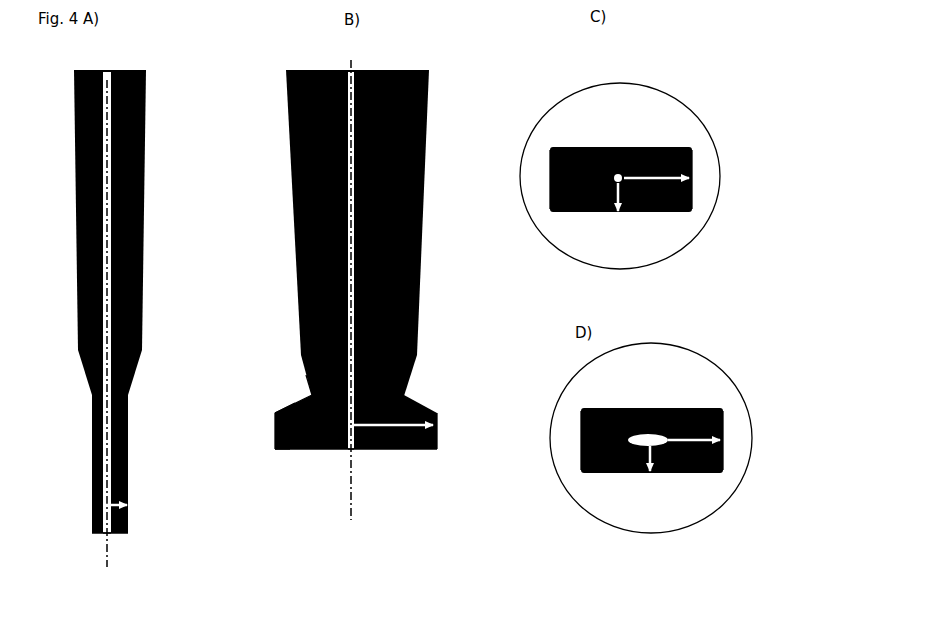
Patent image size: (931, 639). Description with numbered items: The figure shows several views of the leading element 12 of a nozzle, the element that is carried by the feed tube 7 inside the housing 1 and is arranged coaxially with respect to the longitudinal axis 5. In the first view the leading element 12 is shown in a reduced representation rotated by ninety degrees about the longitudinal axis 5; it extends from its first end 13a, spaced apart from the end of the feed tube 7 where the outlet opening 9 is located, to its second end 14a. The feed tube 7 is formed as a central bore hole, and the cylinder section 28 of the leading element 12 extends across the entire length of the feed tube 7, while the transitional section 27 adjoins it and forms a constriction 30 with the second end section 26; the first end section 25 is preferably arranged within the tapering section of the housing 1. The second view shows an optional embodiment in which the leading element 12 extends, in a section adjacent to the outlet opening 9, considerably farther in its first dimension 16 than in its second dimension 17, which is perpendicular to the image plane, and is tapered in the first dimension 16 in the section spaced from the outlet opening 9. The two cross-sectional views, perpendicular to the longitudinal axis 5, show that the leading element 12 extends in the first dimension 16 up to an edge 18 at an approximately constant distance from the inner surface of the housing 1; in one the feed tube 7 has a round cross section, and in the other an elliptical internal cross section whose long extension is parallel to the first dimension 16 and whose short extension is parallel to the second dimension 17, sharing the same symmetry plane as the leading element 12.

In FIG. 4C, the housing 1 is at (623, 82).
In FIG. 4D, the housing 1 is at (655, 343).
In FIG. 4A, the longitudinal axis 5 is at (108, 563).
In FIG. 4B, the longitudinal axis 5 is at (352, 515).
In FIG. 4A, the feed tube 7 is at (107, 72).
In FIG. 4B, the feed tube 7 is at (353, 71).
In FIG. 4C, the feed tube 7 is at (615, 175).
In FIG. 4D, the feed tube 7 is at (640, 437).
In FIG. 4A, the outlet opening 9 is at (110, 536).
In FIG. 4B, the outlet opening 9 is at (353, 452).
In FIG. 4A, the leading element 12 is at (131, 452).
In FIG. 4B, the leading element 12 is at (432, 405).
In FIG. 4C, the leading element 12 is at (644, 145).
In FIG. 4D, the leading element 12 is at (673, 406).
In FIG. 4A, the first end of the leading element 13a is at (130, 530).
In FIG. 4B, the first end of the leading element 13a is at (439, 449).
In FIG. 4A, the second end of the leading element 14a is at (130, 391).
In FIG. 4B, the second end of the leading element 14a is at (404, 396).
In FIG. 4B, the first dimension 16 is at (438, 423).
In FIG. 4C, the first dimension 16 is at (695, 180).
In FIG. 4D, the first dimension 16 is at (725, 442).
In FIG. 4A, the second dimension 17 is at (130, 505).
In FIG. 4C, the second dimension 17 is at (618, 214).
In FIG. 4D, the second dimension 17 is at (650, 476).
In FIG. 4B, the edge 18 is at (274, 426).
In FIG. 4C, the edge 18 is at (695, 155).
In FIG. 4D, the edge 18 is at (725, 418).
In FIG. 4B, the first end section 25 is at (284, 405).
In FIG. 4B, the second end section 26 is at (272, 436).
In FIG. 4B, the transitional section 27 is at (302, 382).
In FIG. 4B, the cylinder section 28 is at (292, 229).
In FIG. 4B, the constriction 30 is at (306, 393).